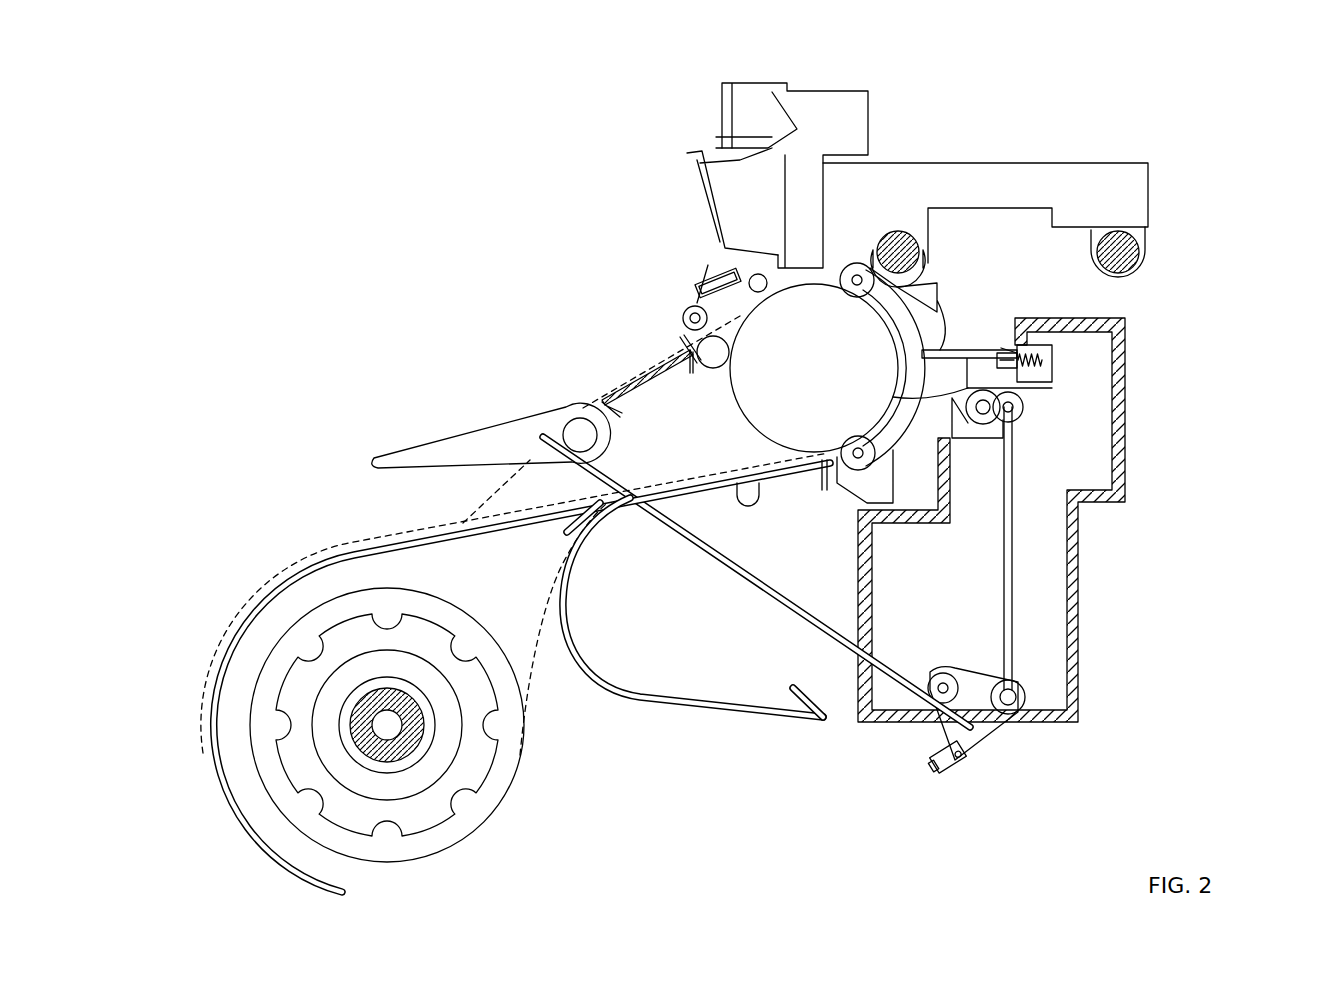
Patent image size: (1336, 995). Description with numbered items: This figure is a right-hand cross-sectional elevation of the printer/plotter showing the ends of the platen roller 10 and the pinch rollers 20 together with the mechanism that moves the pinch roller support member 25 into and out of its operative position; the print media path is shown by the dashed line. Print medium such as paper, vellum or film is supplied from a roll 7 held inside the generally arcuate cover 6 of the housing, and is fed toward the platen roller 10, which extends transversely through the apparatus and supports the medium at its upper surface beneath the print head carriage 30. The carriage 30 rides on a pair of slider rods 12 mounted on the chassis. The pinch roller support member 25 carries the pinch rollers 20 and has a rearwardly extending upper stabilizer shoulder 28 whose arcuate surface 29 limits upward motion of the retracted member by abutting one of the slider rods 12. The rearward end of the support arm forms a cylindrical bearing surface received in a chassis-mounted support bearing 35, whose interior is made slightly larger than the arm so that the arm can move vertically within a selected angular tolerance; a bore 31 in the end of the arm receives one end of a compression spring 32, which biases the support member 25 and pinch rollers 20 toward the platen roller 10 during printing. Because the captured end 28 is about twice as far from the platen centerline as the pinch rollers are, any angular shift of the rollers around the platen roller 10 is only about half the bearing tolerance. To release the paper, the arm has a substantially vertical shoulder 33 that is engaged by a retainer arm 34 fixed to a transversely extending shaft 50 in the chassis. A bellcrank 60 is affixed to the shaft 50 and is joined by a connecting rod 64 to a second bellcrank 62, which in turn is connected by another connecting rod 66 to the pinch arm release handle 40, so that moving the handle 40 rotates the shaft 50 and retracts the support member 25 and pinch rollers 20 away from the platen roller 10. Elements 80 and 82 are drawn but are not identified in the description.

The arcuate cover 6 is at (215, 803).
The roll of print medium 7 is at (467, 843).
The platen roller 10 is at (745, 432).
The printer carriage slider rods 12 is at (898, 231).
The pinch rollers 20 is at (850, 290).
The pinch roller support member 25 is at (916, 448).
The upper stabilizer shoulder 28 is at (893, 315).
The arcuate surface 29 is at (918, 270).
The print head carriage 30 is at (842, 70).
The bore 31 is at (1001, 348).
The compression spring 32 is at (1052, 380).
The vertically extending shoulder 33 is at (945, 350).
The retainer arm 34 is at (893, 396).
The support bearing 35 is at (1050, 353).
The pinch arm release handle 40 is at (470, 438).
The shaft 50 is at (995, 418).
The bellcrank 60 is at (1022, 412).
The second bellcrank 62 is at (1000, 738).
The connecting rod 64 is at (1002, 596).
The connecting rod 66 is at (760, 596).
The bracket 80 is at (762, 302).
The roller 82 is at (712, 368).